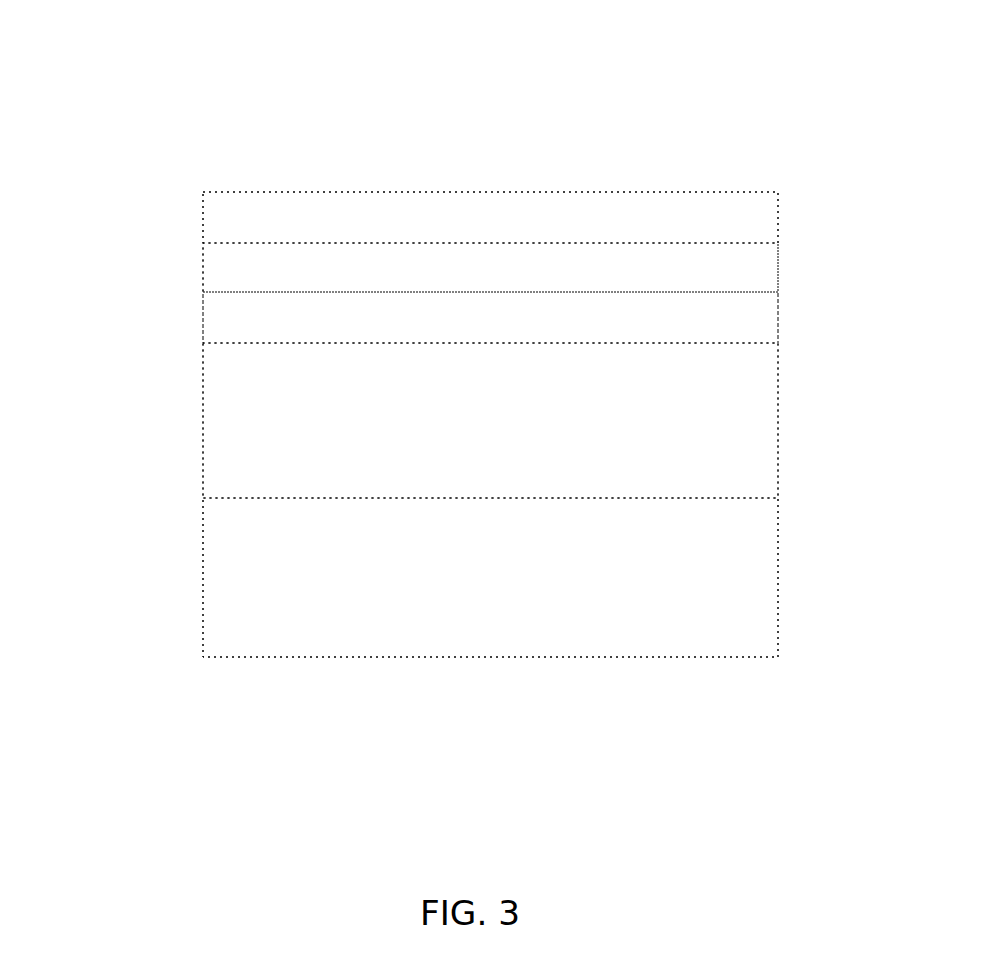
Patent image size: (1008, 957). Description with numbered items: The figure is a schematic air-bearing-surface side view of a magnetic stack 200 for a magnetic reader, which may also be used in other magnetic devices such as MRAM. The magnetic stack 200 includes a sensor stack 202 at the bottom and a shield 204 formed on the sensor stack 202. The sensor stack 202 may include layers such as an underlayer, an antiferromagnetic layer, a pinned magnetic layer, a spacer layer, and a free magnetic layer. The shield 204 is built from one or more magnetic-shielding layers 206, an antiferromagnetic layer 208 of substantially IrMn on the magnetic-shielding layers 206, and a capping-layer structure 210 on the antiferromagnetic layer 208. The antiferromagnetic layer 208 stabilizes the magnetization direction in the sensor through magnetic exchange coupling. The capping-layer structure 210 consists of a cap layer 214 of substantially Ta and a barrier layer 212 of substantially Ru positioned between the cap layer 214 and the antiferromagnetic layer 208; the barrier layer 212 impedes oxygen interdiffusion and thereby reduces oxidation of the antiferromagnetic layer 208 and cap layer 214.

The magnetic stack 200 is at (233, 77).
The sensor stack 202 is at (779, 578).
The shield 204 is at (466, 327).
The magnetic-shielding layers 206 is at (205, 427).
The antiferromagnetic layer 208 is at (204, 323).
The capping-layer structure 210 is at (140, 156).
The barrier layer 212 is at (204, 278).
The cap layer 214 is at (204, 219).